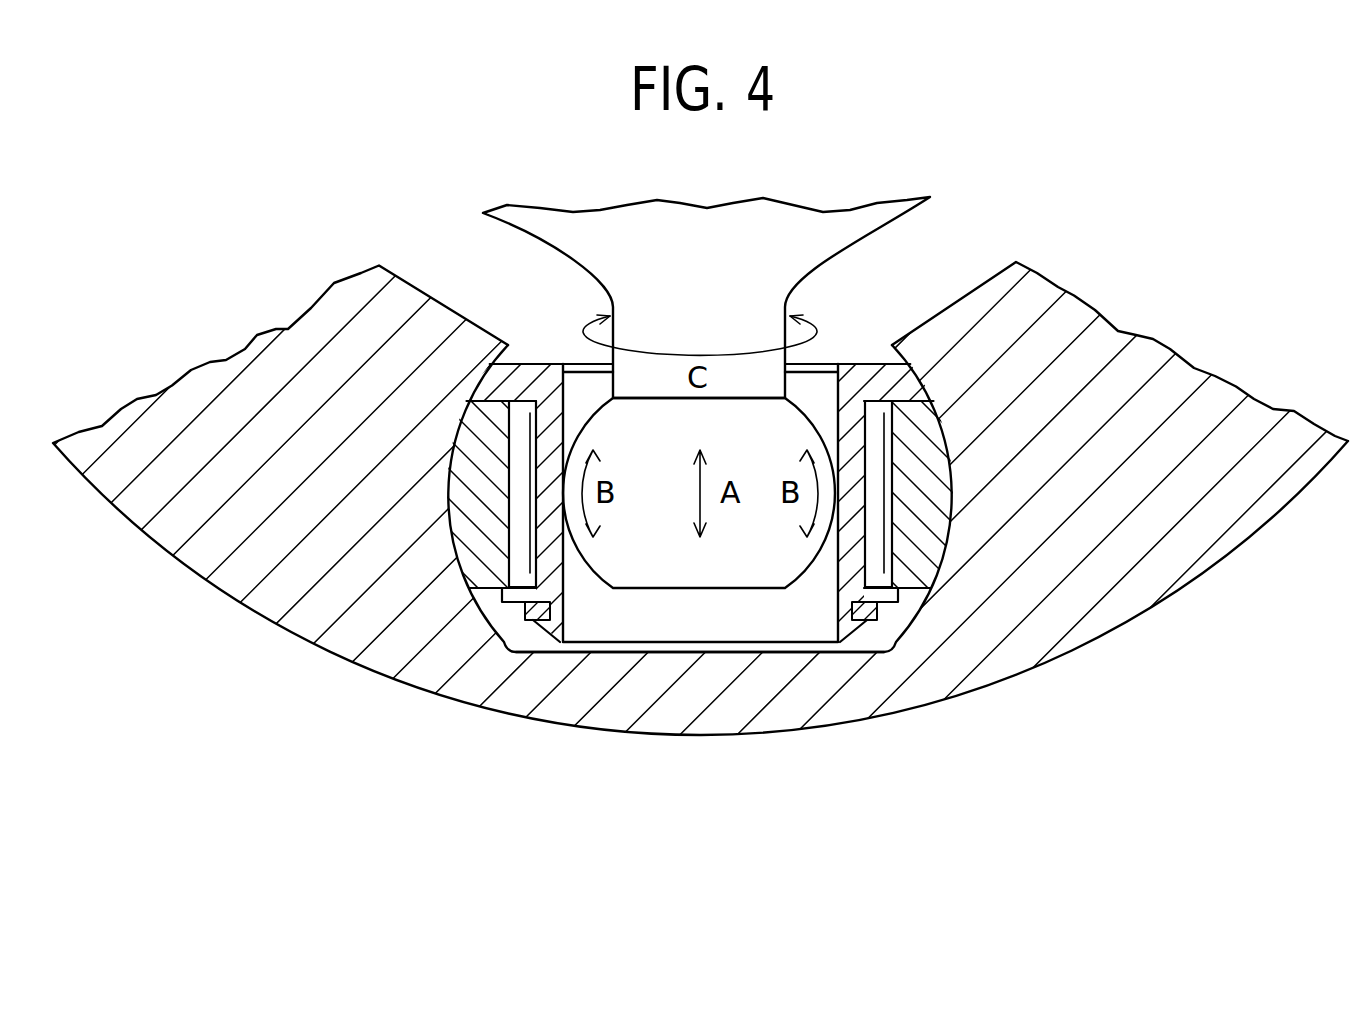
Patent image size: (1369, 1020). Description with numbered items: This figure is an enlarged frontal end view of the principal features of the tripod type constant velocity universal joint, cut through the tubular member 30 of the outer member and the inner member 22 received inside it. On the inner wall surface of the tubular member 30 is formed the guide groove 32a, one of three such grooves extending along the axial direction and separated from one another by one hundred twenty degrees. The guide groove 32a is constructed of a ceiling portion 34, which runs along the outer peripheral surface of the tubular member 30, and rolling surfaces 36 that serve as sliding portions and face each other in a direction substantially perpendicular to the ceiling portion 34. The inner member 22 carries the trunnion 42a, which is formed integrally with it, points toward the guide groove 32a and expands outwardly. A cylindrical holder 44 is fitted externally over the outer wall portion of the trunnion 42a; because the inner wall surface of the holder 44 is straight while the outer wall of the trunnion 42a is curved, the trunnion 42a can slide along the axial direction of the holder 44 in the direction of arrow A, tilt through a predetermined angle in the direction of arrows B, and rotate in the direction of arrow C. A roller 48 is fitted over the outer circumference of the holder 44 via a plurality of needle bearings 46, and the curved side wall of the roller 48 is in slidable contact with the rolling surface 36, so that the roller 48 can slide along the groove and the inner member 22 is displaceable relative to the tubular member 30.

The tubular member 30 is at (353, 618).
The inner member 22 is at (765, 220).
The holder 44 is at (870, 375).
The needle bearings 46 is at (873, 565).
The roller 48 is at (928, 556).
The trunnion 42a is at (688, 573).
The rolling surfaces 36 is at (498, 625).
The ceiling portion 34 is at (543, 648).
The guide groove 32a is at (597, 791).